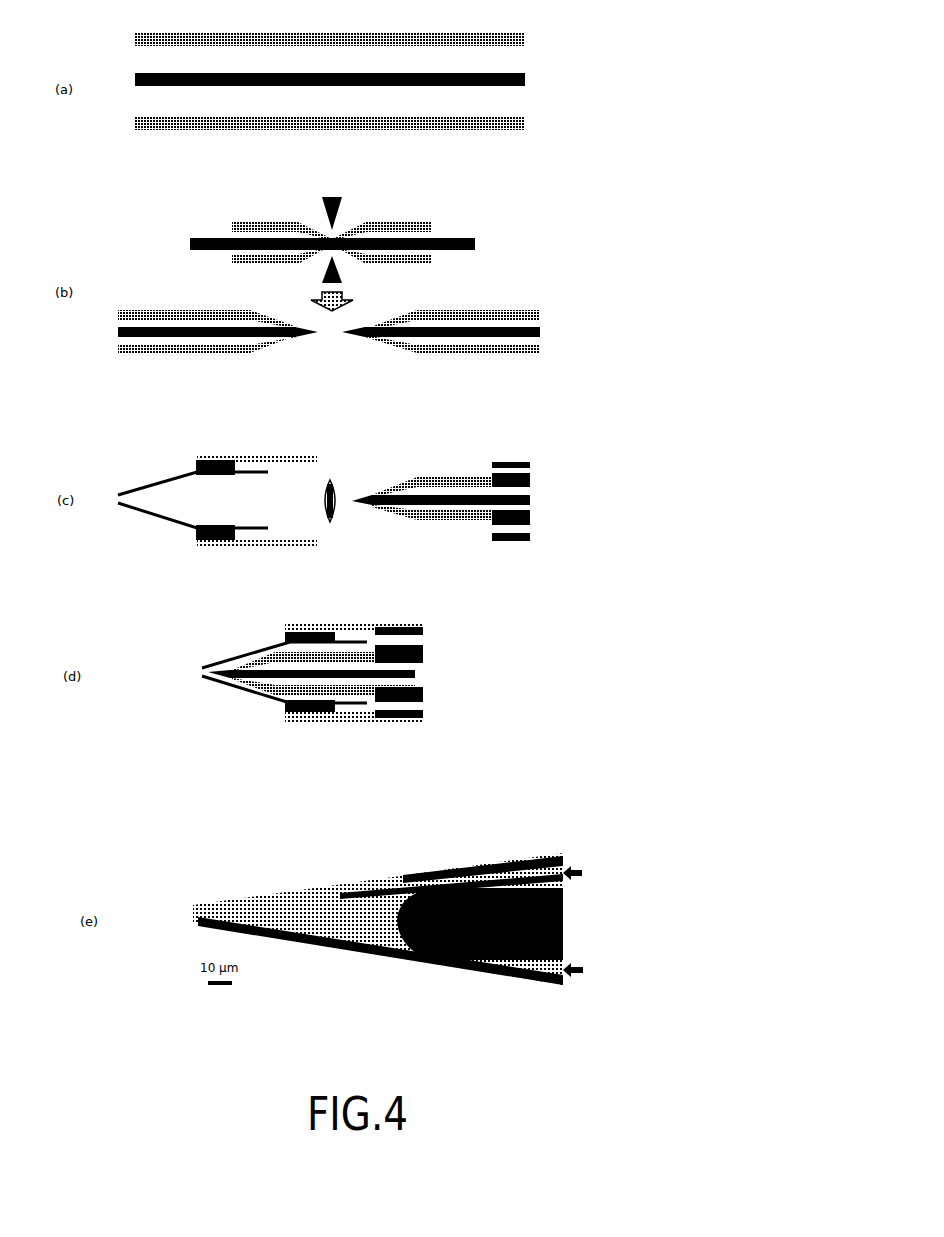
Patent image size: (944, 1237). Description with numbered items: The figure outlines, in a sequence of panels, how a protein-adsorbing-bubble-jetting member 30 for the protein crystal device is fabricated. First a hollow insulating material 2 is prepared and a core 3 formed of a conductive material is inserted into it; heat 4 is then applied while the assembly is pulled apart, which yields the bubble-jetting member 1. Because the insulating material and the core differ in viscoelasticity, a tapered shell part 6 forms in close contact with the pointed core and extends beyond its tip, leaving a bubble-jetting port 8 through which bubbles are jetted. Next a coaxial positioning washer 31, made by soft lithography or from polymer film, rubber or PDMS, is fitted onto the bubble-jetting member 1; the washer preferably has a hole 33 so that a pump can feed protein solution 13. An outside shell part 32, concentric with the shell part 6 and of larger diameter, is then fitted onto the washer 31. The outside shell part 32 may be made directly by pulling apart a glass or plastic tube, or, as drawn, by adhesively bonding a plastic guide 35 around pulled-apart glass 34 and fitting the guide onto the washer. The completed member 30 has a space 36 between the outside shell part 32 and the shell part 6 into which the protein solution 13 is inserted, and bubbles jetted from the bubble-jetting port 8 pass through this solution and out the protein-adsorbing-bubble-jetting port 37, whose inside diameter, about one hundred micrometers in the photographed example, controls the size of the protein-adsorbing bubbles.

The bubble-jetting member 1 is at (524, 287).
The hollow insulating material 2 is at (525, 40).
The core 3 is at (525, 83).
The heat 4 is at (342, 200).
The shell part 6 is at (413, 477).
The bubble-jetting port 8 is at (368, 926).
The protein solution 13 is at (593, 929).
The protein-adsorbing-bubble-jetting member 30 is at (433, 653).
The coaxial positioning washer 31 is at (510, 462).
The outside shell part 32 is at (185, 445).
The hole 33 is at (512, 473).
The pulled-apart glass 34 is at (162, 486).
The guide 35 is at (285, 454).
The space 36 is at (366, 642).
The protein-adsorbing-bubble-jetting port 37 is at (199, 671).